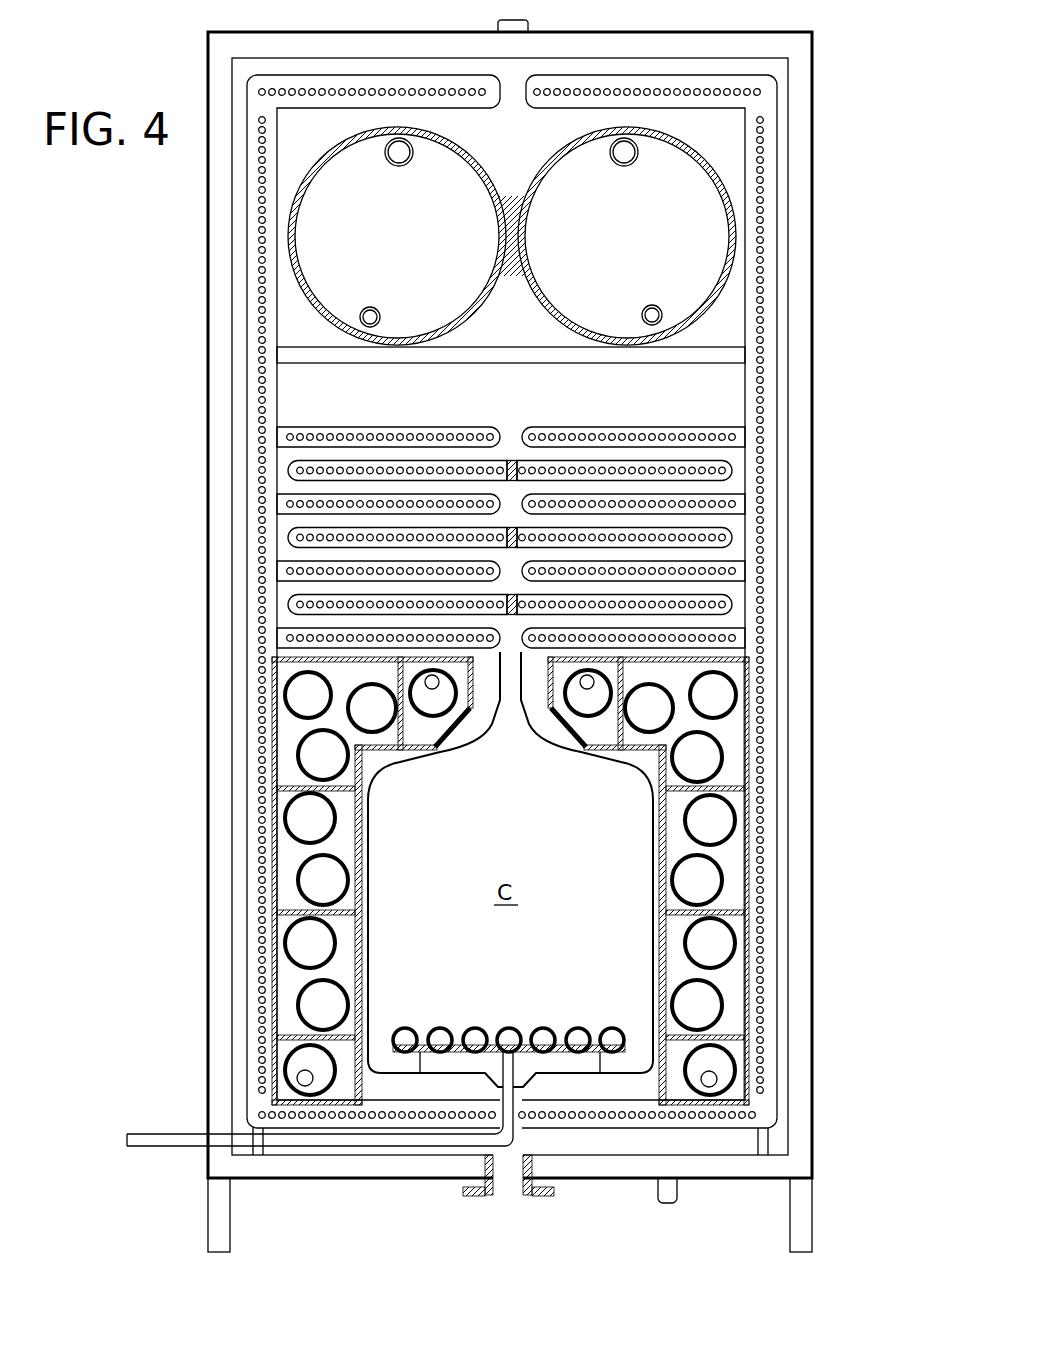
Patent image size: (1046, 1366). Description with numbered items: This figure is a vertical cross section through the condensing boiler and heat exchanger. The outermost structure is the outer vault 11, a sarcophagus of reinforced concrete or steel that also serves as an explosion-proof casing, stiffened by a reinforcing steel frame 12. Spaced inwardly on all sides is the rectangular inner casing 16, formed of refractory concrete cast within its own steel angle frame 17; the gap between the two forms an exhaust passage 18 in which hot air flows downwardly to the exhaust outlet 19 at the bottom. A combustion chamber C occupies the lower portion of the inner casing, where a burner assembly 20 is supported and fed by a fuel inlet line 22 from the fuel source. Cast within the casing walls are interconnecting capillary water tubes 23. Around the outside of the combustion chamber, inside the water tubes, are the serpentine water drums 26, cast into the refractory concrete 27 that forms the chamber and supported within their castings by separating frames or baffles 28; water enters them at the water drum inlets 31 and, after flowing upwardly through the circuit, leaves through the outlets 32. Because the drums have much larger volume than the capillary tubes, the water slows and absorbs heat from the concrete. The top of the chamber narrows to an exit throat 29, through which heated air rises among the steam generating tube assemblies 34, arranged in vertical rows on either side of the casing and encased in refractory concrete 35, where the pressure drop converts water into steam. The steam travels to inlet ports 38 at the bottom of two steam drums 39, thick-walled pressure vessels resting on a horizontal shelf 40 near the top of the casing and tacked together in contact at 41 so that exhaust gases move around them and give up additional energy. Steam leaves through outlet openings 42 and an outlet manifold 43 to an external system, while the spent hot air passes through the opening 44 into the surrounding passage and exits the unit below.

The outer vault 11 is at (814, 581).
The reinforcing steel frame 12 is at (814, 75).
The inner casing 16 is at (262, 352).
The steel angle frame 17 is at (780, 94).
The exhaust passage 18 is at (246, 775).
The exhaust outlet 19 is at (497, 1197).
The burner assembly 20 is at (510, 1030).
The fuel inlet line 22 is at (150, 1133).
The capillary water tubes 23 is at (772, 861).
The water drums 26 is at (313, 877).
The refractory concrete 27 is at (378, 762).
The separating frames 28 is at (728, 785).
The exit throat 29 is at (508, 705).
The water drum inlets 31 is at (305, 1078).
The outlets 32 is at (432, 683).
The steam generating tube assemblies 34 is at (575, 423).
The refractory concrete 35 is at (723, 566).
The inlet ports 38 is at (648, 305).
The steam drums 39 is at (290, 213).
The horizontal shelf 40 is at (475, 350).
The contact point 41 is at (511, 272).
The outlet openings 42 is at (399, 167).
The outlet manifold 43 is at (497, 21).
The opening 44 is at (512, 98).